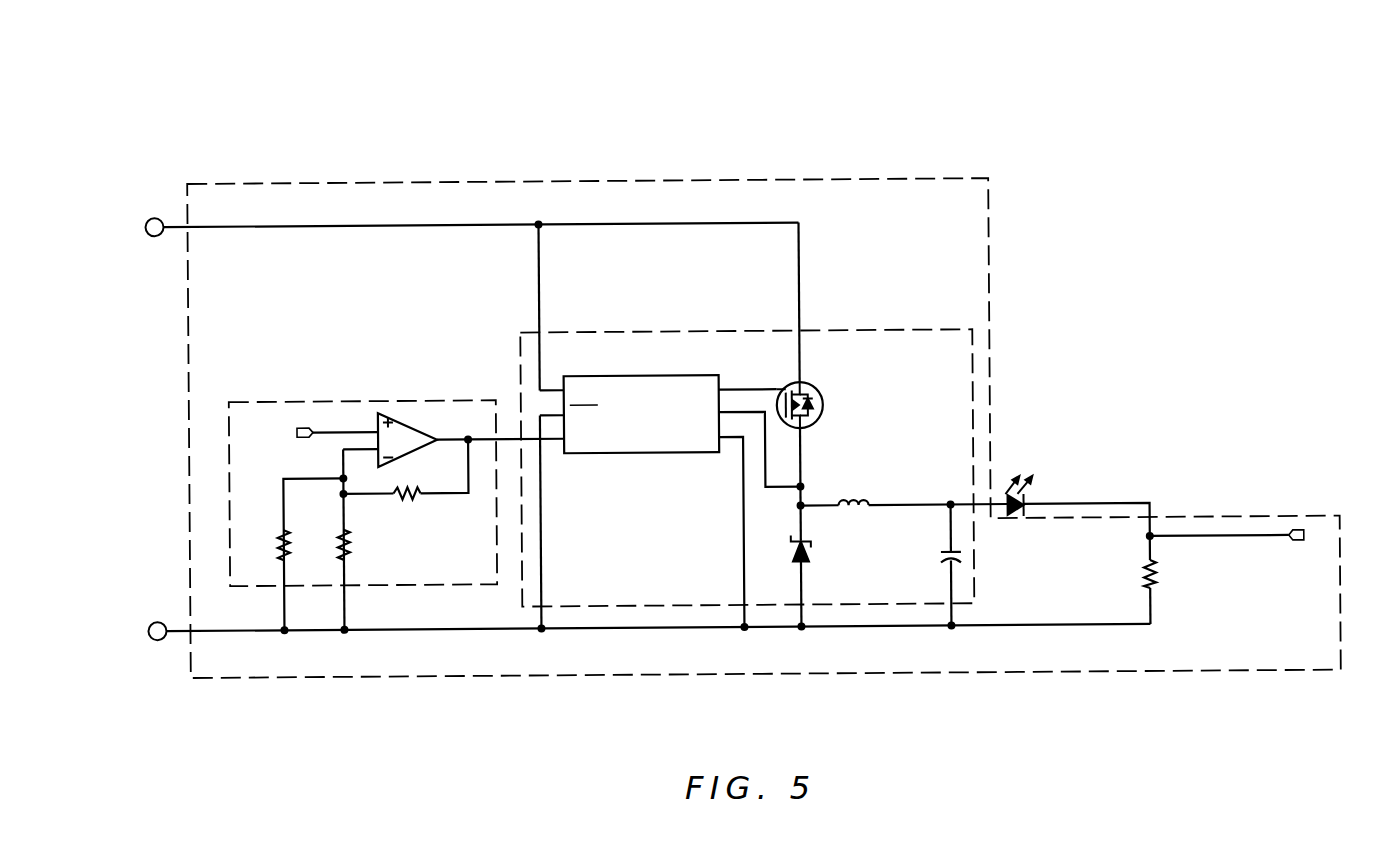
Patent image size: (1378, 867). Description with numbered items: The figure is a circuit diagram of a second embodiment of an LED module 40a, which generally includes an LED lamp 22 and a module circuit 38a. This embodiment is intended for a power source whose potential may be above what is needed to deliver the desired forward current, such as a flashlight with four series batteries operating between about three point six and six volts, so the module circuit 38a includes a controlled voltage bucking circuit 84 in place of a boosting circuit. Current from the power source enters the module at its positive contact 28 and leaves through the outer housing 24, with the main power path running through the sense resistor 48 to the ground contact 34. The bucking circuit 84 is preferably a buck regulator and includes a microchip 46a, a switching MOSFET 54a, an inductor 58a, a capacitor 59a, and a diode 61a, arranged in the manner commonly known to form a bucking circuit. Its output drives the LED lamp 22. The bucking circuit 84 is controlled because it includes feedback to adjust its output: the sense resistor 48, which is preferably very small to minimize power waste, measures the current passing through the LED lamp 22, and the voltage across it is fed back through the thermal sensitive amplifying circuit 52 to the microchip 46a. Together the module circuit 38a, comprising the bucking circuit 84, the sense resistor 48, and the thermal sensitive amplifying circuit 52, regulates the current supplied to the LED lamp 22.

The LED module 40a is at (1070, 110).
The module circuit 38a is at (443, 183).
The positive contact 28 is at (153, 217).
The outer housing 24 is at (161, 670).
The ground contact 34 is at (156, 641).
The controlled voltage bucking circuit 84 is at (657, 335).
The microchip 46a is at (642, 457).
The thermal sensitive amplifying circuit 52 is at (283, 402).
The switching MOSFET 54a is at (823, 405).
The inductor 58a is at (853, 507).
The capacitor 59a is at (941, 562).
The diode 61a is at (789, 558).
The LED lamp 22 is at (1013, 518).
The sense resistor 48 is at (1154, 580).